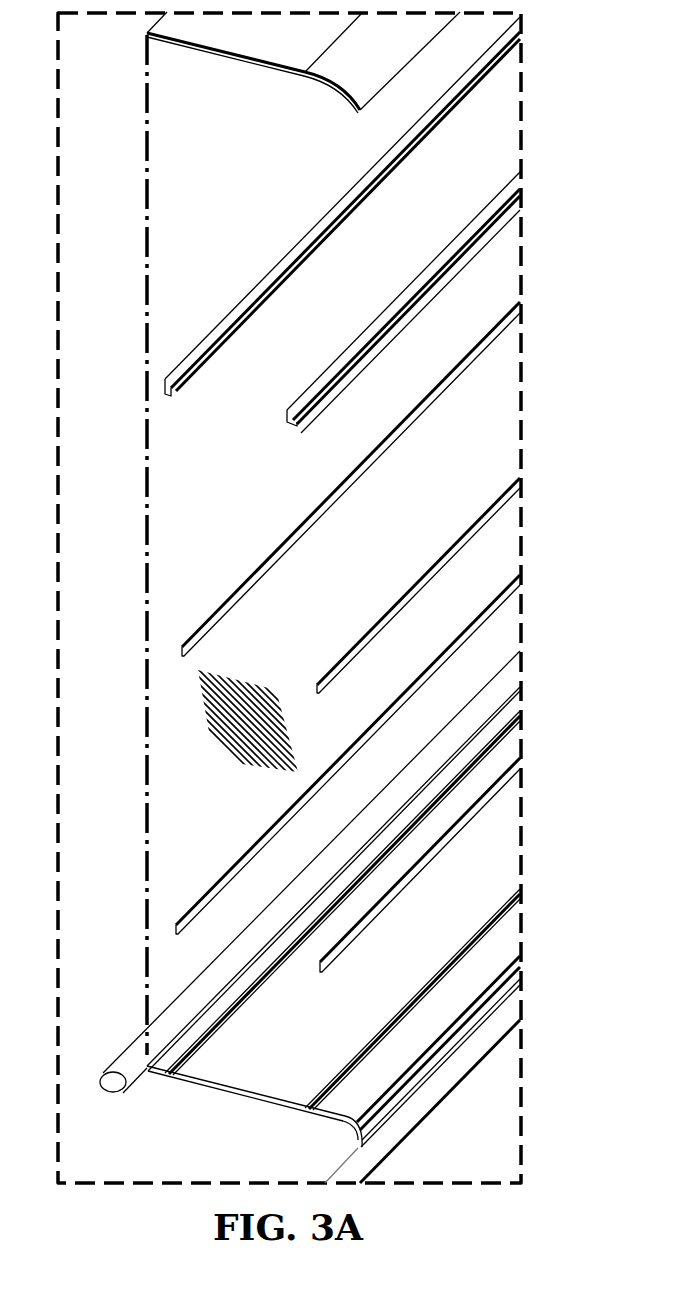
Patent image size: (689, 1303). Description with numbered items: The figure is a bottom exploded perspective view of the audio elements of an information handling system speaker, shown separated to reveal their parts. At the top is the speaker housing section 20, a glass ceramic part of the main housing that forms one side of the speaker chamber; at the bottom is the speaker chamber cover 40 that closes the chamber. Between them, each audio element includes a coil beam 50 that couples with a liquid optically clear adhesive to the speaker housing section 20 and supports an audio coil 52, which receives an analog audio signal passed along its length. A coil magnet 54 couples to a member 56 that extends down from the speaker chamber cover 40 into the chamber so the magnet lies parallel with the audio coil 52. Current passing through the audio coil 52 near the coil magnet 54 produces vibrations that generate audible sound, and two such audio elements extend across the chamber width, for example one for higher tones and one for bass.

The speaker housing section 20 is at (243, 62).
The speaker chamber cover 40 is at (331, 917).
The coil beam 50 is at (252, 289).
The audio coil 52 is at (252, 575).
The coil magnet 54 is at (248, 852).
The member 56 is at (235, 1010).